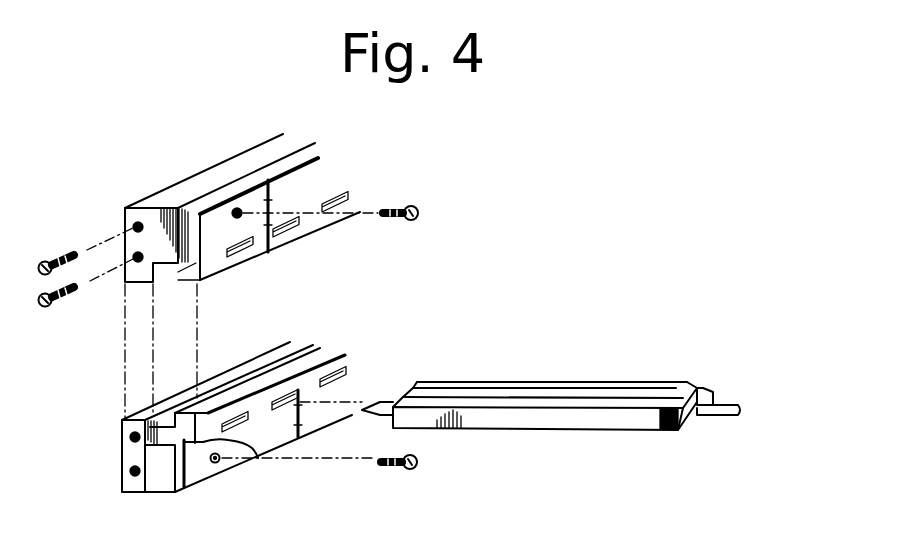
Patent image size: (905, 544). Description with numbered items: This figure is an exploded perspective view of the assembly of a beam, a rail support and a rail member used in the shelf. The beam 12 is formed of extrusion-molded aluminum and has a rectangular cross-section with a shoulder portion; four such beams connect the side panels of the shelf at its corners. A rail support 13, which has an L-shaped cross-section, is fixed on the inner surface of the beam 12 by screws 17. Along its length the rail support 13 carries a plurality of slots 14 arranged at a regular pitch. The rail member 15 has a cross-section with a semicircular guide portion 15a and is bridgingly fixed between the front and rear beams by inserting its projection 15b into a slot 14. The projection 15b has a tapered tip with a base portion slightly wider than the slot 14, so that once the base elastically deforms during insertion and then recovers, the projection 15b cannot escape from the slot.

The beam 12 is at (197, 178).
The rail support 13 is at (307, 231).
The slot 14 is at (244, 254).
The rail member 15 is at (518, 424).
The semicircular guide portion 15a is at (668, 385).
The projection 15b is at (733, 400).
The screw 17 is at (418, 206).